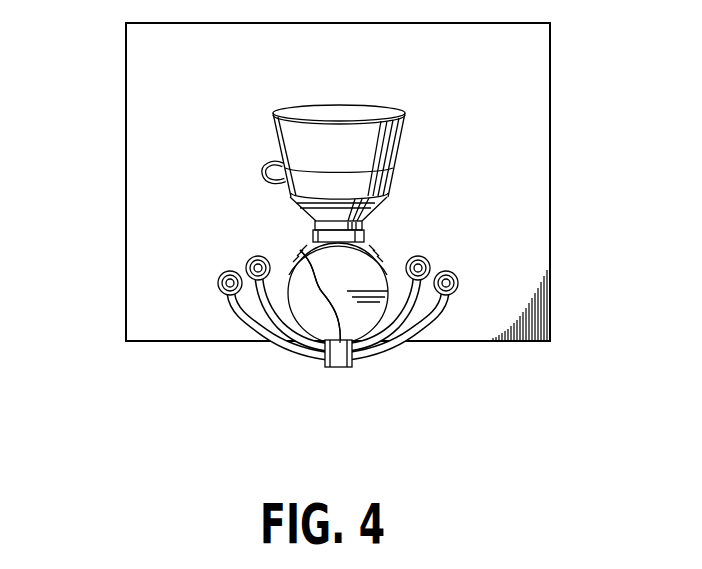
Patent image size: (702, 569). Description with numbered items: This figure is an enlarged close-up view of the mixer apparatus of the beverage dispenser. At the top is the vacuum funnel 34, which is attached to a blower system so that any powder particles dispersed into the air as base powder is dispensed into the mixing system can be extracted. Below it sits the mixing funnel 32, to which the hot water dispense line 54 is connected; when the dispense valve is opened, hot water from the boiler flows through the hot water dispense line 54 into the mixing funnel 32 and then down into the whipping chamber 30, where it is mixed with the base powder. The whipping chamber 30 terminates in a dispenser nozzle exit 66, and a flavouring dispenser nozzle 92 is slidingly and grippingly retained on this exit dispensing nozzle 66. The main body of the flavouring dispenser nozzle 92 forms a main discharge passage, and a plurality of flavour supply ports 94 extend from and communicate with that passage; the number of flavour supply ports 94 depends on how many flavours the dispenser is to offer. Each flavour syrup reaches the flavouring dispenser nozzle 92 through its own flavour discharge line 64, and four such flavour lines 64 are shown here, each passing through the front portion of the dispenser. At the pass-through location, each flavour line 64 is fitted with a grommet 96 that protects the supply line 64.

The whipping chamber 30 is at (370, 266).
The mixing funnel 32 is at (395, 182).
The vacuum funnel 34 is at (392, 133).
The hot water dispense line 54 is at (262, 177).
The flavour discharge line 64 is at (187, 344).
The dispenser nozzle exit 66 is at (298, 258).
The flavouring dispenser nozzle 92 is at (338, 368).
The flavour supply ports 94 is at (358, 362).
The grommet 96 is at (219, 280).